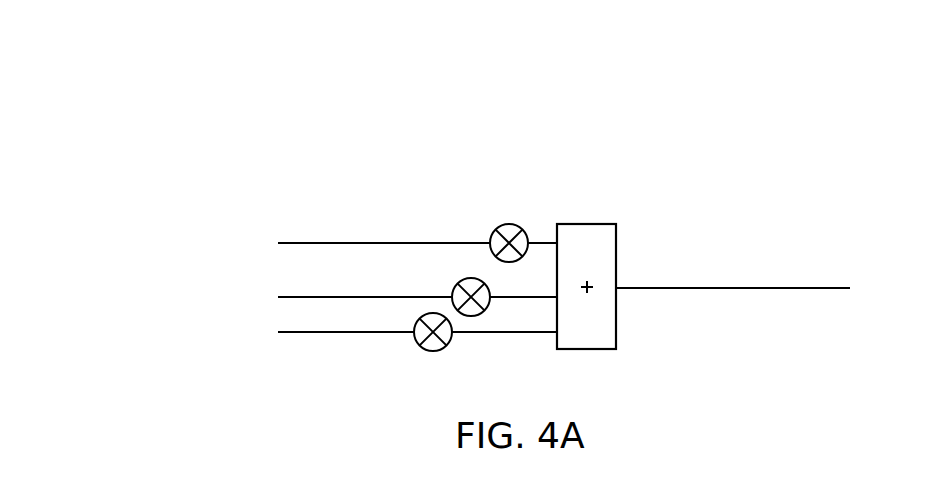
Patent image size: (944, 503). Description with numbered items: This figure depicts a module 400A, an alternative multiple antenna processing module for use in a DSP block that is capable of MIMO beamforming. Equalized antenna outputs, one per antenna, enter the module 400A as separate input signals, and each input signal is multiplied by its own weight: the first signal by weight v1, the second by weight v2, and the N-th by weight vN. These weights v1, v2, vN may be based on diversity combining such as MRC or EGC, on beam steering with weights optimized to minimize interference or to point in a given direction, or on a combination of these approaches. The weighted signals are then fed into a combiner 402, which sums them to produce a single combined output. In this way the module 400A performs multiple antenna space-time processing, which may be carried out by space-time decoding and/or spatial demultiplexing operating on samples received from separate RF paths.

The module 400A is at (136, 14).
The combiner (summation unit) 402 is at (585, 224).
The first weighting multiplier v1 is at (433, 313).
The second weighting multiplier v2 is at (471, 278).
The N-th weighting multiplier vN is at (509, 224).